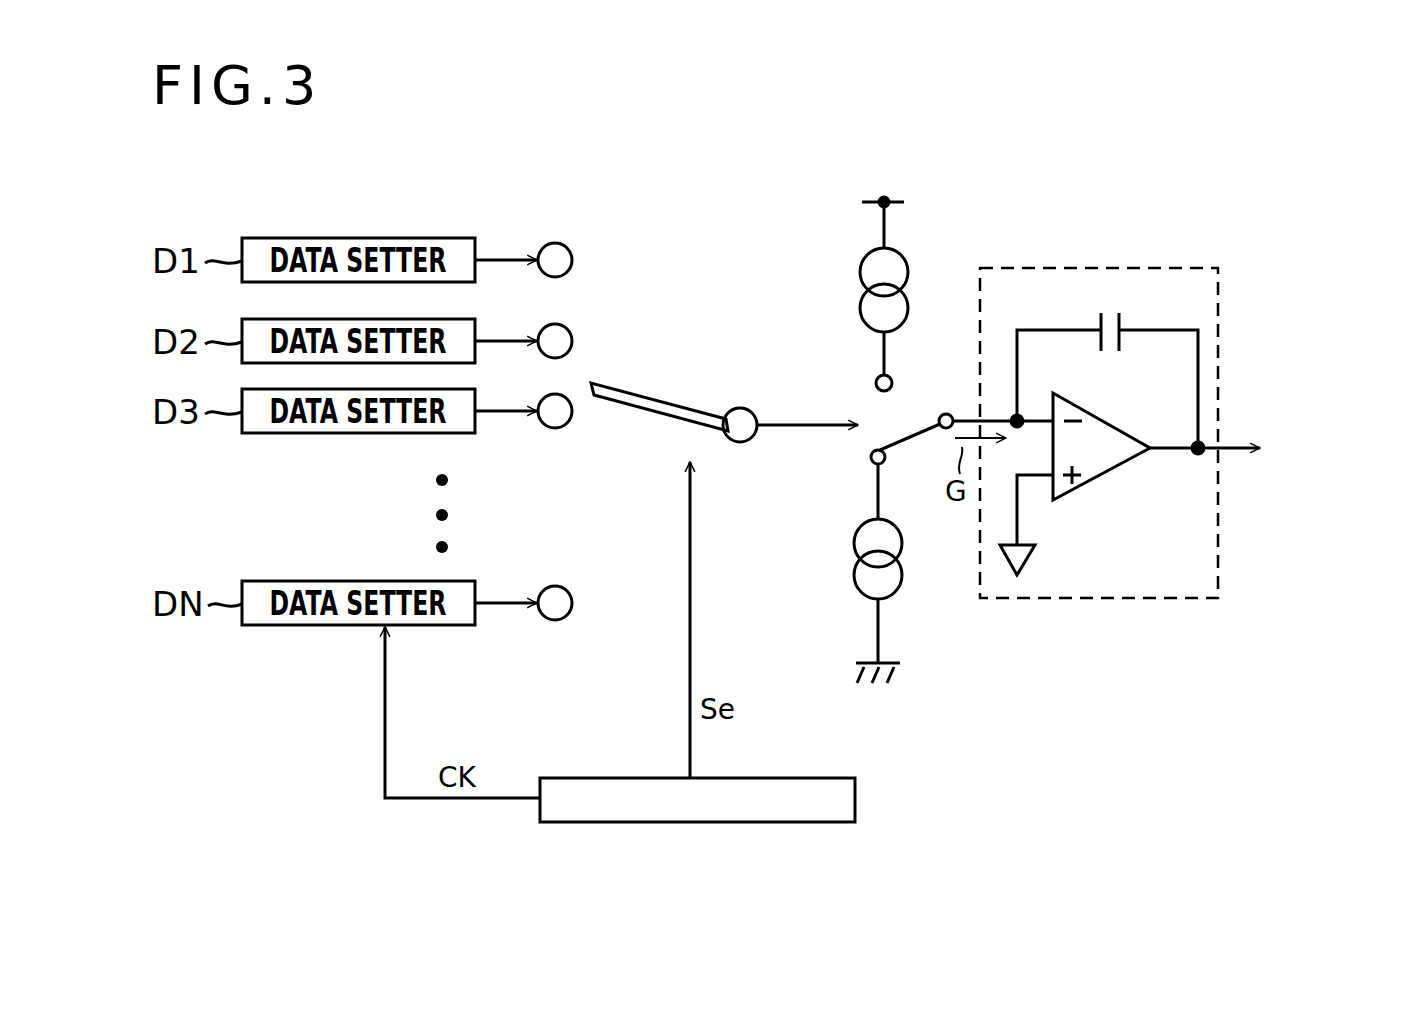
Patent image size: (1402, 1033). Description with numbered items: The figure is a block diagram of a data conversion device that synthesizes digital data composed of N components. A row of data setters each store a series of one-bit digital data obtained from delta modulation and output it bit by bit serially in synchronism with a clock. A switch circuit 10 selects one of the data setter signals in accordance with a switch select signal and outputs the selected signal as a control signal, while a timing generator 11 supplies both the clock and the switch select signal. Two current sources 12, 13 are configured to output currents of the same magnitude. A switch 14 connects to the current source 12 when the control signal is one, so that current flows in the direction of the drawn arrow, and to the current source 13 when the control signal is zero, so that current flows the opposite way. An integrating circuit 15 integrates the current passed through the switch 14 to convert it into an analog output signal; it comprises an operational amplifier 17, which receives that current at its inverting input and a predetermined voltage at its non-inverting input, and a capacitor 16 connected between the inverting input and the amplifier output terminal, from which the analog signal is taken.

The switch circuit 10 is at (677, 388).
The timing generator 11 is at (762, 822).
The current source 12 is at (908, 268).
The current source 13 is at (855, 578).
The switch 14 is at (853, 444).
The integrating circuit 15 is at (1128, 268).
The capacitor 16 is at (1120, 318).
The operational amplifier 17 is at (1098, 478).